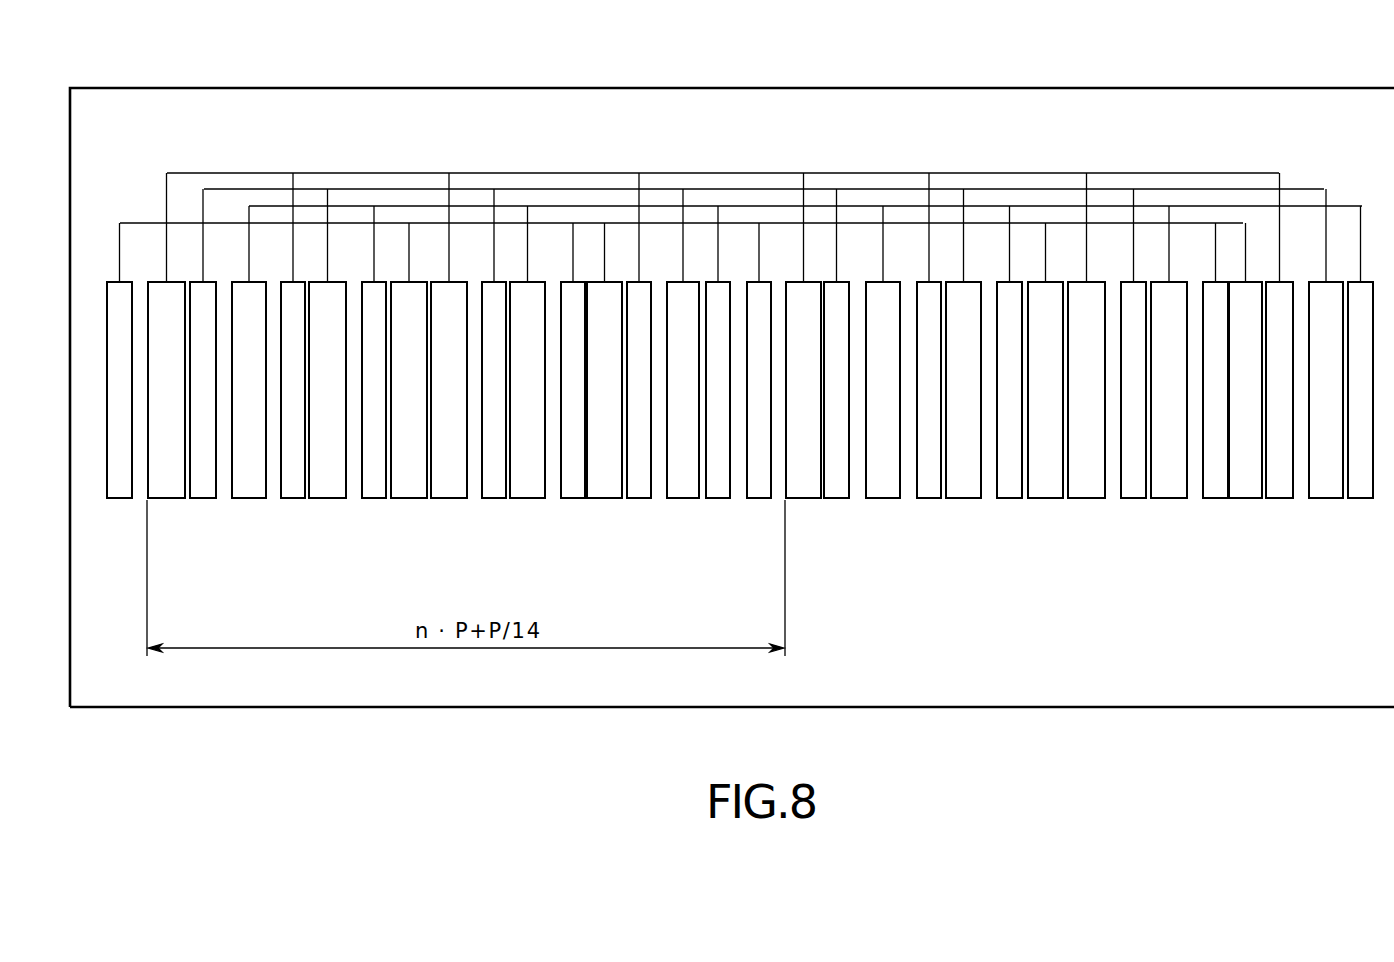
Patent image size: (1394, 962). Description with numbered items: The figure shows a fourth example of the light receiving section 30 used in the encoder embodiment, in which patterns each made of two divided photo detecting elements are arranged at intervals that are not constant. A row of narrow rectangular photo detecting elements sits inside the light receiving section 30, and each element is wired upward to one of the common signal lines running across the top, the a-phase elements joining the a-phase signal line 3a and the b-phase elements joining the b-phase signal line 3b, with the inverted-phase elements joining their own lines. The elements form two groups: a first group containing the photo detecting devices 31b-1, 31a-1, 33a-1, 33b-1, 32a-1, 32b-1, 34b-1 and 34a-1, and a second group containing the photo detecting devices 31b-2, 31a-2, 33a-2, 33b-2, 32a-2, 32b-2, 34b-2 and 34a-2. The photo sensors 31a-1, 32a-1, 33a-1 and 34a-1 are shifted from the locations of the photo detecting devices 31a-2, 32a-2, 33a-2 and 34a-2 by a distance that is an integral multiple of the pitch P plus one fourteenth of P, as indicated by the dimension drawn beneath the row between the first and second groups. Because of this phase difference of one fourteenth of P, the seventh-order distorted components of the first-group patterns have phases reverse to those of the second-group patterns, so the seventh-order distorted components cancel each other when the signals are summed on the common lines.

The light receiving section 30 is at (775, 88).
The a-phase signal line 3a is at (184, 172).
The b-phase signal line 3b is at (137, 222).
The photo detecting device 31b-1 is at (120, 498).
The photo detecting device 31a-1 is at (164, 498).
The photo detecting device 33a-1 is at (293, 498).
The photo detecting device 33b-1 is at (408, 498).
The photo detecting device 32a-1 is at (449, 498).
The photo detecting device 32b-1 is at (572, 498).
The photo detecting device 34b-1 is at (604, 498).
The photo detecting device 34a-1 is at (638, 498).
The photo detecting device 31b-2 is at (759, 498).
The photo detecting device 31a-2 is at (802, 498).
The photo detecting device 33a-2 is at (929, 498).
The photo detecting device 33b-2 is at (1044, 498).
The photo detecting device 32a-2 is at (1086, 498).
The photo detecting device 32b-2 is at (1214, 498).
The photo detecting device 34b-2 is at (1246, 498).
The photo detecting device 34a-2 is at (1278, 498).